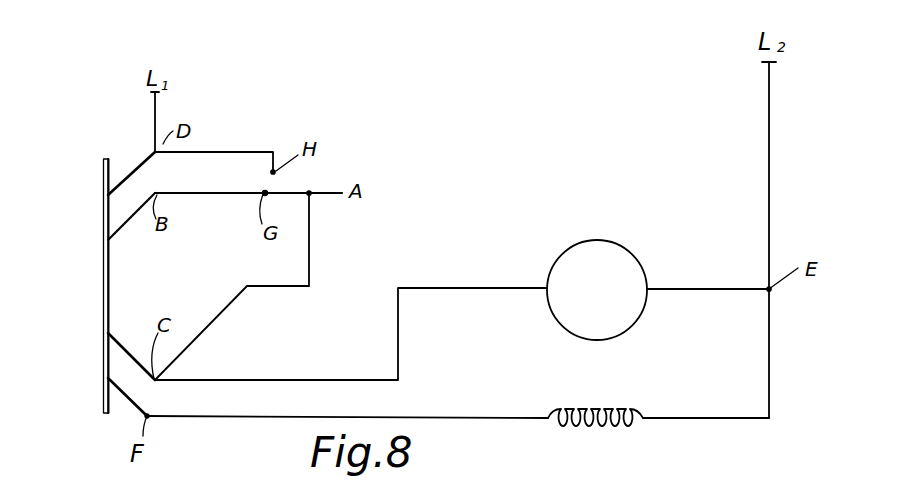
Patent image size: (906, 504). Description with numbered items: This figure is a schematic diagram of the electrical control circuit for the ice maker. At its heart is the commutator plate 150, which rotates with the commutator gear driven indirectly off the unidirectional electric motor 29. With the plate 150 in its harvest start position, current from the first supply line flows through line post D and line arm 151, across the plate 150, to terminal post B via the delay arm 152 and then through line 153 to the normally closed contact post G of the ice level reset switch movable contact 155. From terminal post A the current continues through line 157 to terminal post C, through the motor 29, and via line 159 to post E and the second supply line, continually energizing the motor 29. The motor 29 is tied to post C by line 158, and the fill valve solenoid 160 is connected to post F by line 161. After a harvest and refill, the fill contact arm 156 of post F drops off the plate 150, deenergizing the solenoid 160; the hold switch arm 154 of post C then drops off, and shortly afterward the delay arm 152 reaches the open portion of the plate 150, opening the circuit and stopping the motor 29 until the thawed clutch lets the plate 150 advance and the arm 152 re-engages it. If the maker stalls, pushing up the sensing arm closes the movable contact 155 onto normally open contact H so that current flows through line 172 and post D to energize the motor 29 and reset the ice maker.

The unidirectional electric motor 29 is at (580, 240).
The commutator plate 150 is at (102, 175).
The line arm 151 is at (135, 167).
The delay arm 152 is at (131, 217).
The line 153 is at (198, 195).
The hold switch arm 154 is at (128, 355).
The ice level reset switch movable contact 155 is at (265, 192).
The fill contact arm 156 is at (127, 397).
The line 157 is at (309, 253).
The line 158 is at (267, 378).
The line 159 is at (668, 287).
The fill valve solenoid 160 is at (617, 408).
The line 161 is at (224, 415).
The line 172 is at (231, 152).